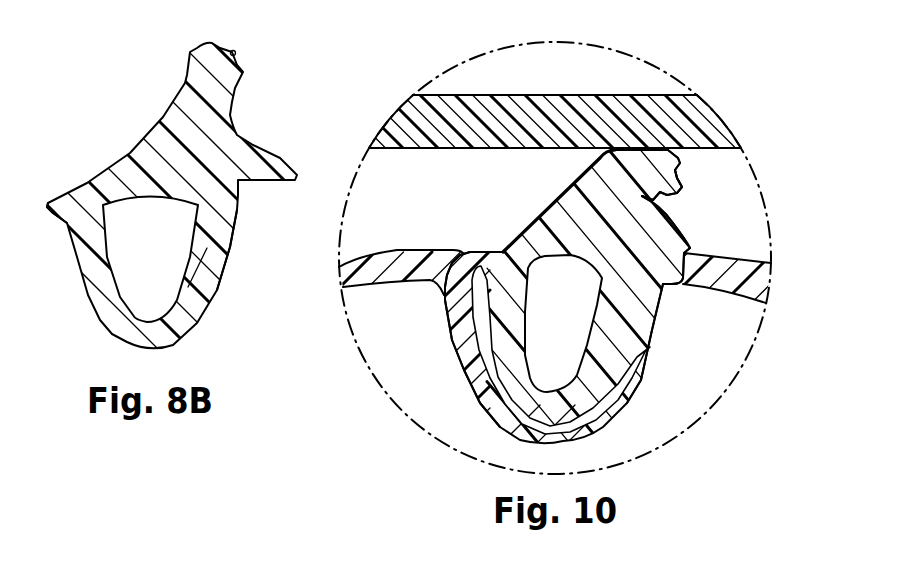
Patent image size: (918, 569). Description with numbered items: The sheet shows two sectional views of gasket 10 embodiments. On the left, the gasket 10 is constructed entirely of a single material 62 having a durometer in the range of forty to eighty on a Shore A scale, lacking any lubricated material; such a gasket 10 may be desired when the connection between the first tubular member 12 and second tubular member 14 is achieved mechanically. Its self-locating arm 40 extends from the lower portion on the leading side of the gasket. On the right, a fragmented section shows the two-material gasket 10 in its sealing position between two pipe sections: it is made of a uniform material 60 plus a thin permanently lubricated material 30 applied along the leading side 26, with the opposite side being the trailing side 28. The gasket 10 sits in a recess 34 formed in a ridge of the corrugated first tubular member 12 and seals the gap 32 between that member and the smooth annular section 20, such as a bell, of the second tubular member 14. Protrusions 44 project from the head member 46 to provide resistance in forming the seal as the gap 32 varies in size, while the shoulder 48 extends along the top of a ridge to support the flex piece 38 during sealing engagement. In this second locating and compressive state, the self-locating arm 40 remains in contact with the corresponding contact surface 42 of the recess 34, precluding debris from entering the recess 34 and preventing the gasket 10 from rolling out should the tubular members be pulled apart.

In FIG. 8B, the gasket 10 is at (127, 97).
In FIG. 10, the first tubular member 12 is at (767, 267).
In FIG. 10, the second tubular member 14 is at (693, 95).
In FIG. 10, the smooth annular section 20 is at (483, 93).
In FIG. 10, the leading side 26 is at (475, 207).
In FIG. 10, the trailing side 28 is at (758, 212).
In FIG. 10, the permanently lubricated material 30 is at (570, 193).
In FIG. 10, the gap 32 is at (363, 182).
In FIG. 10, the recess 34 is at (462, 343).
In FIG. 10, the flex piece 38 is at (627, 217).
In FIG. 8B, the self-locating arm 40 is at (50, 213).
In FIG. 10, the self-locating arm 40 is at (441, 288).
In FIG. 10, the contact surface 42 is at (470, 258).
In FIG. 10, the protrusions 44 is at (680, 164).
In FIG. 10, the head member 46 is at (648, 173).
In FIG. 10, the shoulder 48 is at (677, 281).
In FIG. 10, the uniform material 60 is at (607, 348).
In FIG. 8B, the single material 62 is at (207, 248).